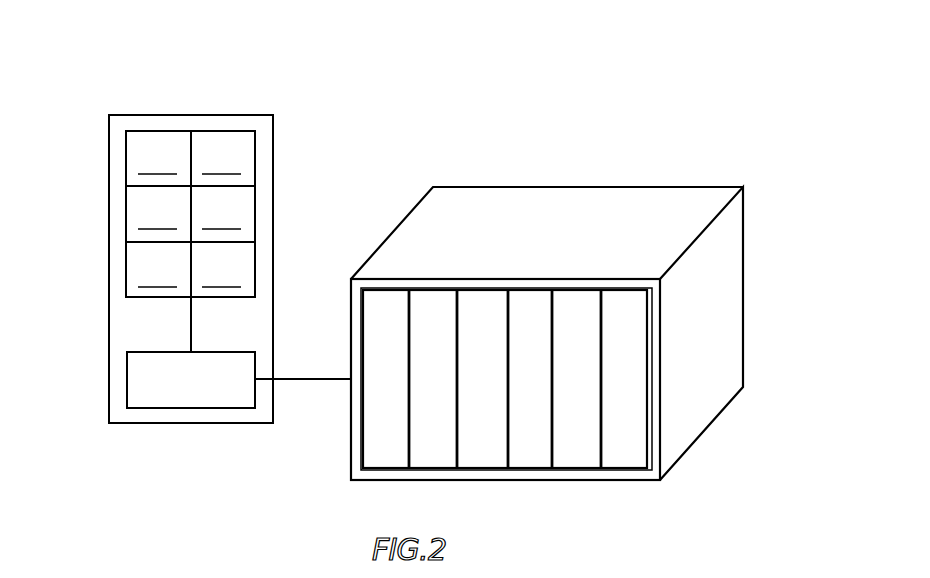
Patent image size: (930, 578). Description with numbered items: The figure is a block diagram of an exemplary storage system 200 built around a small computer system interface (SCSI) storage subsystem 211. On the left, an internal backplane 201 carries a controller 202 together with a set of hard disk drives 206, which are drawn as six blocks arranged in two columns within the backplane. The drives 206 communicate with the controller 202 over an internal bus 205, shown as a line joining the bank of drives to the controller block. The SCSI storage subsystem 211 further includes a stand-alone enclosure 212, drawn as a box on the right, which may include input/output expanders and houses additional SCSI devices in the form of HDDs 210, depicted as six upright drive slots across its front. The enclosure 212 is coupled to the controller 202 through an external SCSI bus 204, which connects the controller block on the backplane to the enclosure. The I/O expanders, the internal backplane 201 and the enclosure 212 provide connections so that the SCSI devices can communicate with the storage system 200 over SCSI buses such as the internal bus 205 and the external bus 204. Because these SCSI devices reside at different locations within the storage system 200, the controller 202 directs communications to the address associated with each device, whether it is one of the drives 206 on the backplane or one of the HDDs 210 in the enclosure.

The storage system 200 is at (667, 88).
The internal backplane 201 is at (115, 112).
The controller 202 is at (191, 380).
The SCSI bus 204 is at (286, 378).
The internal bus 205 is at (191, 306).
The hard disk drives 206 is at (190, 214).
The HDDs 210 is at (506, 379).
The SCSI storage subsystem 211 is at (737, 172).
The stand-alone enclosure 212 is at (643, 186).